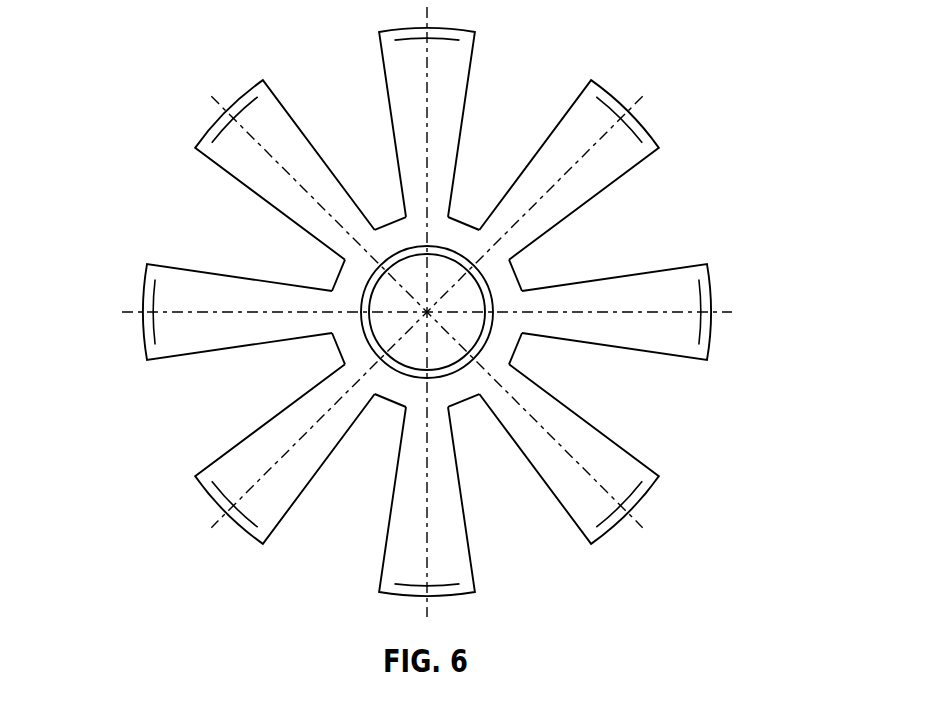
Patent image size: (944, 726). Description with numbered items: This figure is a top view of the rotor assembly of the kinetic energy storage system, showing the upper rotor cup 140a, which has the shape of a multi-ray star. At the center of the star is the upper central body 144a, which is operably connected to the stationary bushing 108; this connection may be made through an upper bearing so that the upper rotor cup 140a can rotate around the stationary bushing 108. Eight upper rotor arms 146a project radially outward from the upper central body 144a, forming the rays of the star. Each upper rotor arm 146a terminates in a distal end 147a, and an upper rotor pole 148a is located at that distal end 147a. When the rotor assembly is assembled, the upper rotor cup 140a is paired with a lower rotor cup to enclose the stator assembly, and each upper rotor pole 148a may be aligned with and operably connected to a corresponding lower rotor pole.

The upper rotor cup 140a is at (174, 33).
The stationary bushing 108 is at (488, 292).
The upper central body 144a is at (392, 231).
The upper rotor arm 146a is at (453, 65).
The distal end 147a is at (709, 292).
The upper rotor pole 148a is at (702, 327).